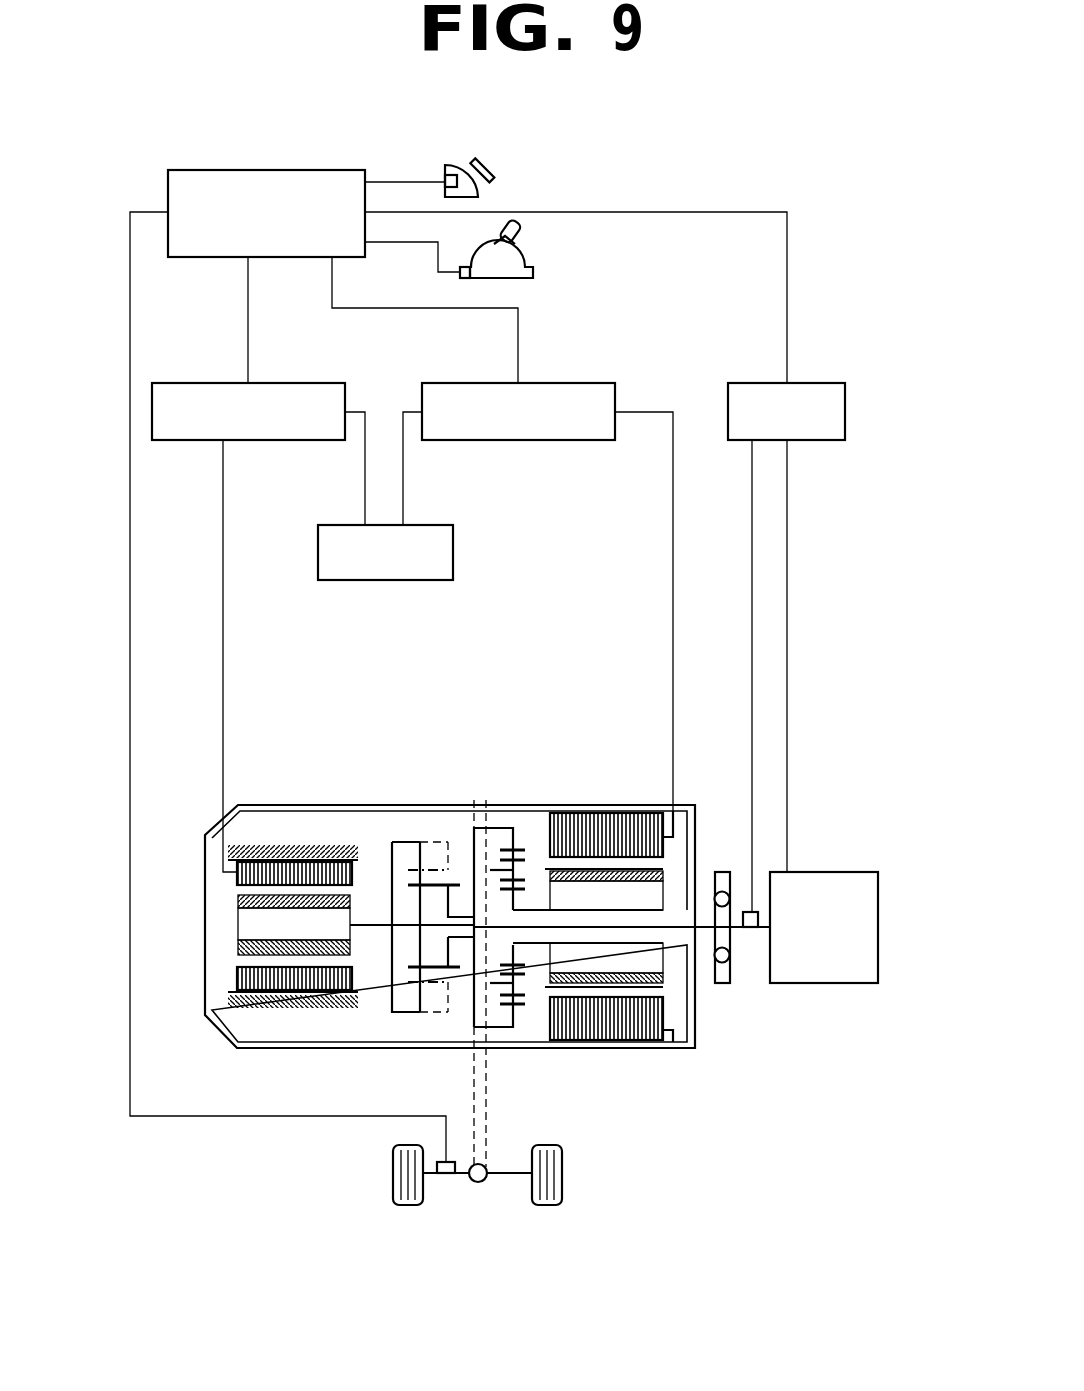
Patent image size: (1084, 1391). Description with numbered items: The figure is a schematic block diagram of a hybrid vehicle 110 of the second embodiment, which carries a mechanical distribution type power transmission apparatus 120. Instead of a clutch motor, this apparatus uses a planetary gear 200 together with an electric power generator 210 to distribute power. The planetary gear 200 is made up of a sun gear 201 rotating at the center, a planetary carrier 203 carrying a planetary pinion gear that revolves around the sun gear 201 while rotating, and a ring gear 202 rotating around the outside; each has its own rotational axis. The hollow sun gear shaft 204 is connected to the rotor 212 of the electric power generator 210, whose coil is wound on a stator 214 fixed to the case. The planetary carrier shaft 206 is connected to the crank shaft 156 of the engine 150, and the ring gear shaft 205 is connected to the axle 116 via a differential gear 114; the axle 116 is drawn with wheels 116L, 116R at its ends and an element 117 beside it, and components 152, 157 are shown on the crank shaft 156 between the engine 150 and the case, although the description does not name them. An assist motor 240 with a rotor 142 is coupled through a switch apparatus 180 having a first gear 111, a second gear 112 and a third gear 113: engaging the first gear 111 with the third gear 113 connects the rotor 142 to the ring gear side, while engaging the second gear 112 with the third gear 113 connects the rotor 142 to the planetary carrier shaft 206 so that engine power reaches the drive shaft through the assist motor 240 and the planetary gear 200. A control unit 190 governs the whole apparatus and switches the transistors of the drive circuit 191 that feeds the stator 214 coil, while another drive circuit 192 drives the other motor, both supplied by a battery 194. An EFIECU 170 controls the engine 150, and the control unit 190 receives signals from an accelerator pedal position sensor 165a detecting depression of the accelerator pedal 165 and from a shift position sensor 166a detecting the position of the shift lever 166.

The hybrid vehicle 110 is at (277, 1180).
The first gear 111 is at (458, 870).
The second gear 112 is at (405, 852).
The third gear 113 is at (430, 857).
The differential gear 114 is at (487, 1182).
The axle 116 is at (515, 1167).
The left driving wheel 116L is at (407, 1205).
The right driving wheel 116R is at (550, 1205).
The vehicle speed sensor 117 is at (463, 1175).
The power transmission apparatus 120 is at (313, 865).
The rotor of the assist motor 142 is at (238, 955).
The engine 150 is at (848, 872).
The speed sensor 152 is at (757, 929).
The crank shaft 156 is at (734, 930).
The damper 157 is at (723, 983).
The accelerator pedal 165 is at (480, 189).
The accelerator pedal position sensor 165a is at (445, 178).
The shift lever 166 is at (525, 227).
The shift position sensor 166a is at (463, 279).
The EFIECU 170 is at (820, 383).
The switch apparatus 180 is at (386, 823).
The control unit 190 is at (293, 170).
The drive circuit 191 is at (557, 383).
The drive circuit 192 is at (293, 383).
The battery 194 is at (427, 525).
The planetary gear 200 is at (580, 897).
The sun gear 201 is at (515, 900).
The ring gear 202 is at (520, 848).
The planetary carrier 203 is at (530, 878).
The sun gear shaft 204 is at (548, 1040).
The ring gear shaft 205 is at (460, 1012).
The planetary carrier shaft 206 is at (505, 1006).
The electric power generator 210 is at (638, 921).
The rotor 212 is at (665, 977).
The stator 214 is at (670, 1046).
The assist motor 240 is at (292, 803).